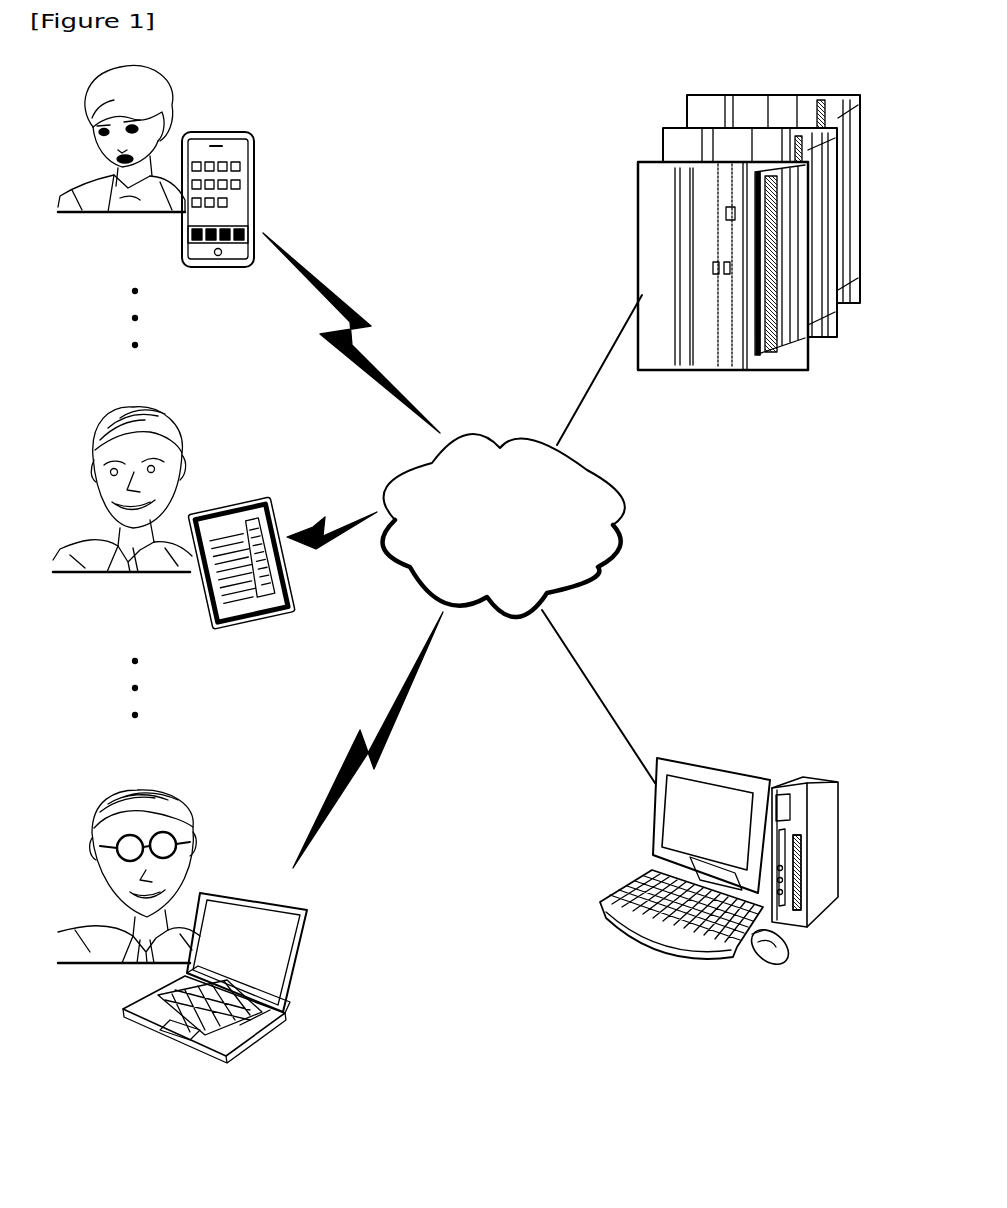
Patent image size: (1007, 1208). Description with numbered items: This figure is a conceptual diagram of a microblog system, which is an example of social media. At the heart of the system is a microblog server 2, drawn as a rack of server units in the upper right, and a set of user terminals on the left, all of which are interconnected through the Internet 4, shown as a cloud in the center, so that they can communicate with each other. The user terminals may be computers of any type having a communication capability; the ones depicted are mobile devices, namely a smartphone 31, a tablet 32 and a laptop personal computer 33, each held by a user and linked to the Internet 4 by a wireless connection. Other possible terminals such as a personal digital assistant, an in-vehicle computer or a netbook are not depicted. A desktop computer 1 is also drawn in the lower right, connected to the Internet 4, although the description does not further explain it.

The computer terminal 1 is at (806, 782).
The microblog server 2 is at (638, 200).
The Internet 4 is at (504, 534).
The smartphone 31 is at (257, 164).
The tablet 32 is at (243, 500).
The laptop personal computer 33 is at (300, 944).